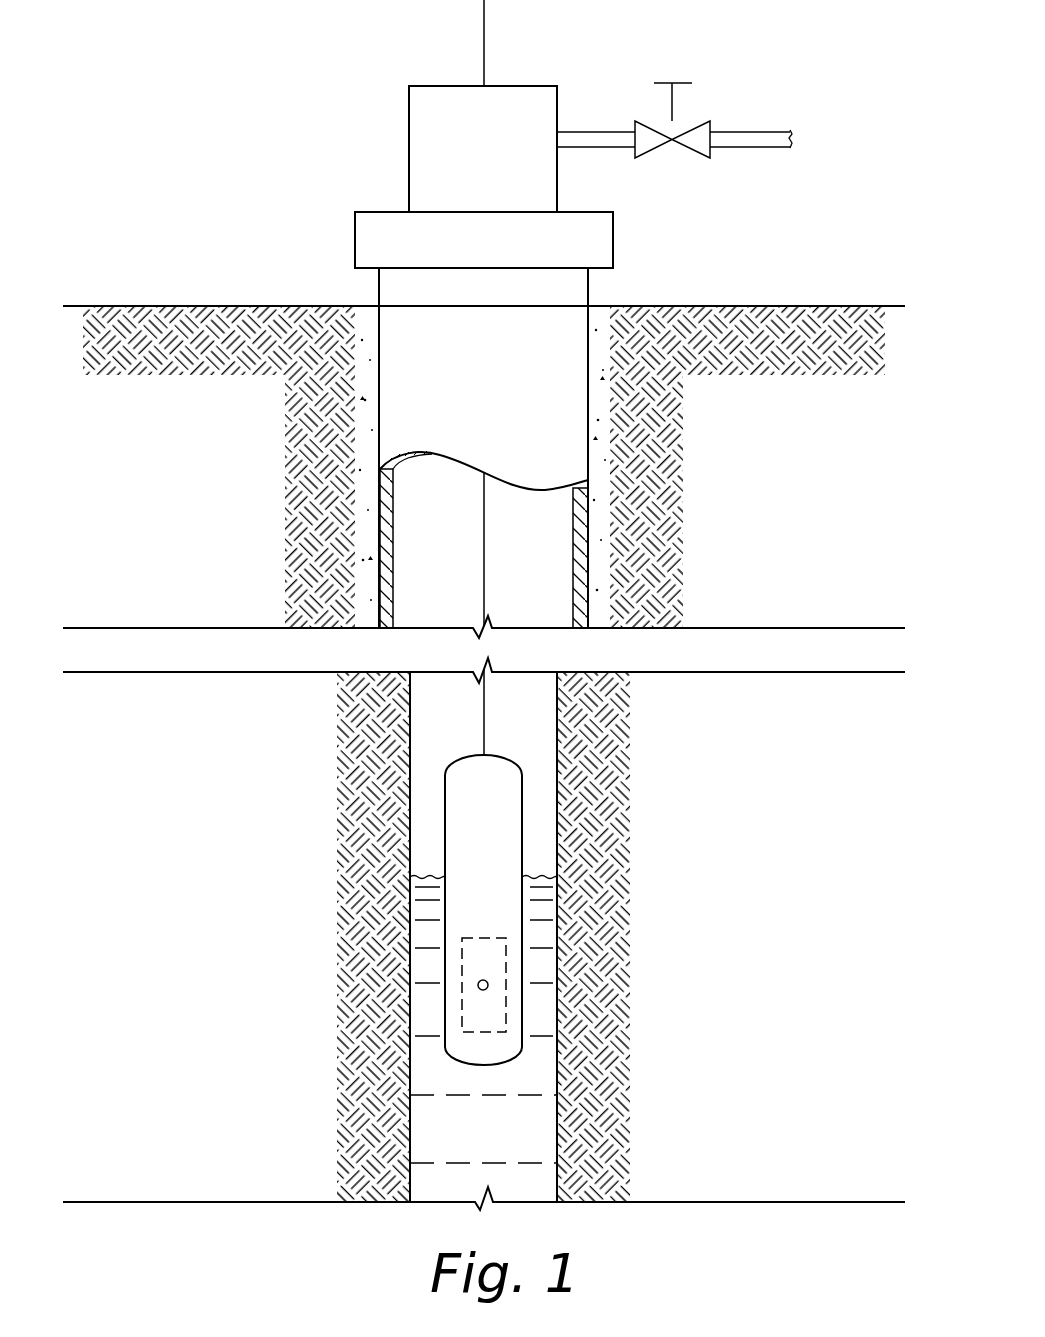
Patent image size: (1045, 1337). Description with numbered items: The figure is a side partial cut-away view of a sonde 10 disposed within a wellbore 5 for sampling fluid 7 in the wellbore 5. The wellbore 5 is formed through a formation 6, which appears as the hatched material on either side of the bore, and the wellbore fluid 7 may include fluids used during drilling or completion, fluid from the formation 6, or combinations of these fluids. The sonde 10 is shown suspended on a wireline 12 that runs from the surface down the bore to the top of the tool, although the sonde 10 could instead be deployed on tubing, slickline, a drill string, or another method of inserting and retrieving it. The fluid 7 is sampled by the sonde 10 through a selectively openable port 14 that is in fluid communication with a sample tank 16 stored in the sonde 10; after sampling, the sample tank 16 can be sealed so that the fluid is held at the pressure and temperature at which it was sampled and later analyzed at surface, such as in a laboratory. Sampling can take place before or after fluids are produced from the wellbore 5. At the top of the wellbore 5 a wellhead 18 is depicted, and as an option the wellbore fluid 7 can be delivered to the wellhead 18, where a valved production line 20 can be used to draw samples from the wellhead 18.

The wireline 12 is at (485, 25).
The wellhead 18 is at (613, 240).
The valved production line 20 is at (745, 132).
The formation 6 is at (613, 775).
The sonde 10 is at (530, 832).
The fluid 7 is at (537, 915).
The sample tank 16 is at (505, 968).
The selectively openable port 14 is at (488, 985).
The wellbore 5 is at (557, 1131).